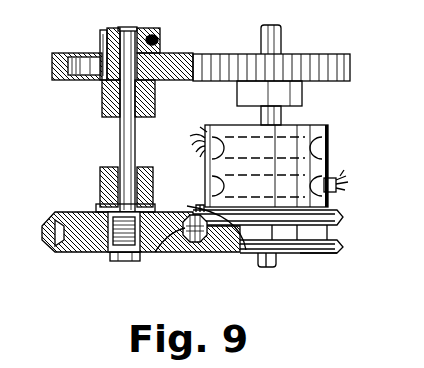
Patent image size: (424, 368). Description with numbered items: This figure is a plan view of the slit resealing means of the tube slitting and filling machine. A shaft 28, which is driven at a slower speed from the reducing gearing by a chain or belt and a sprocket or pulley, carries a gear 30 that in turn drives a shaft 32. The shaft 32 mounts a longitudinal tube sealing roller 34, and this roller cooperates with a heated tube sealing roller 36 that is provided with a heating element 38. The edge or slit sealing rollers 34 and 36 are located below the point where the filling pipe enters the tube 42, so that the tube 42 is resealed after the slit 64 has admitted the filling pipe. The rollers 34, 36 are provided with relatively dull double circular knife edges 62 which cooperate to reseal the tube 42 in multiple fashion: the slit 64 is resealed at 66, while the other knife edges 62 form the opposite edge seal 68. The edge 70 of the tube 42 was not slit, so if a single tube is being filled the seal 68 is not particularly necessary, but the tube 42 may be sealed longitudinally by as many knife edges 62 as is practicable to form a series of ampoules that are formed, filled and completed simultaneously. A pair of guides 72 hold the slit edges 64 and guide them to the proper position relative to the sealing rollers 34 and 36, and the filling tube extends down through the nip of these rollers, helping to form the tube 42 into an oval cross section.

The shaft 28 is at (282, 34).
The gear 30 is at (330, 58).
The shaft 32 is at (120, 136).
The longitudinal tube sealing roller 34 is at (72, 252).
The heated tube sealing roller 36 is at (332, 254).
The heating element 38 is at (330, 127).
The tube 42 is at (172, 228).
The double circular knife edges 62 is at (342, 247).
The slit 64 is at (207, 250).
The reseal 66 is at (195, 244).
The opposite edge seal 68 is at (196, 212).
The edge 70 is at (200, 211).
The guides 72 is at (258, 259).